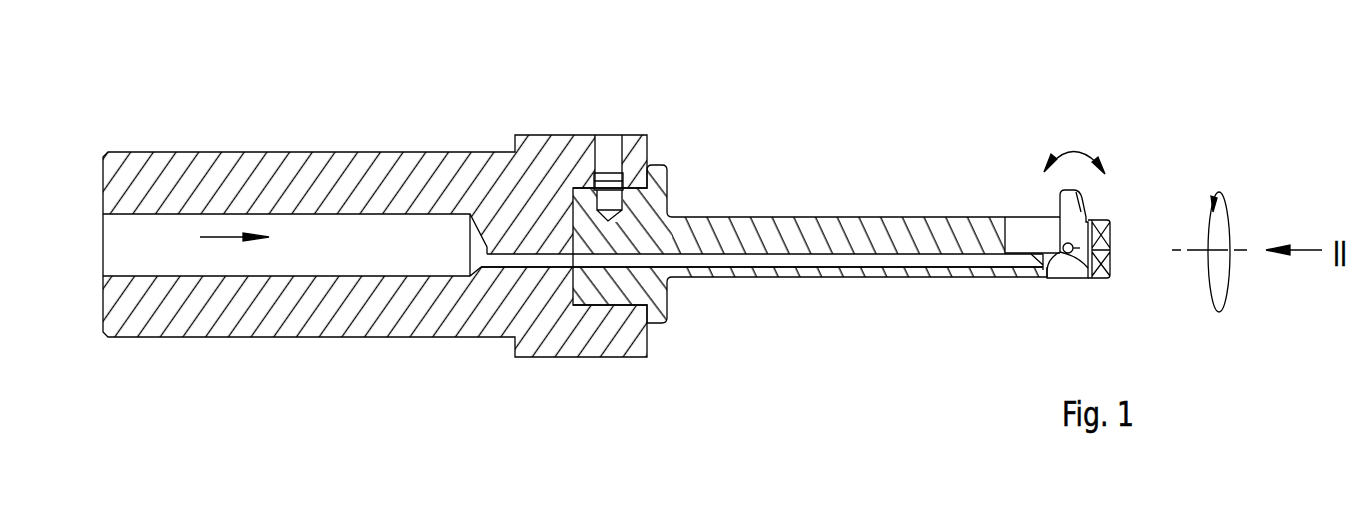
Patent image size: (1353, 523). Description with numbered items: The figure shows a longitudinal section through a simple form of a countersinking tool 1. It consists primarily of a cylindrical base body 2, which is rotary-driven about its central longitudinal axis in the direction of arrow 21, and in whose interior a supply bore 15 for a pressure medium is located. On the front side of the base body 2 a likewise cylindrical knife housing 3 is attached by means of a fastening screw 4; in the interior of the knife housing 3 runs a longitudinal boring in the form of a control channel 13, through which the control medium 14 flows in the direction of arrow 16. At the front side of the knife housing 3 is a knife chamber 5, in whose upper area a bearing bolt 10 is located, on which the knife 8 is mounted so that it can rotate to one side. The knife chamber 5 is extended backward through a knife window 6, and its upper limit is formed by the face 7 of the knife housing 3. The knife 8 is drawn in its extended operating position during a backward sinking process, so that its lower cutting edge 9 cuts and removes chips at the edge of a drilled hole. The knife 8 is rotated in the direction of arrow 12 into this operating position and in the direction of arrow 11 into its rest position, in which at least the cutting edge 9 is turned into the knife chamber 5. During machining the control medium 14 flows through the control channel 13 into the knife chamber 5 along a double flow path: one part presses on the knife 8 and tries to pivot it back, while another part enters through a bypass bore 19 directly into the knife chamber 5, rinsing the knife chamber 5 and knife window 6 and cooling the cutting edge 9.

The countersinking tool 1 is at (790, 138).
The base body 2 is at (537, 150).
The knife housing 3 is at (812, 233).
The fastening screw 4 is at (612, 182).
The knife chamber 5 is at (1030, 230).
The knife window 6 is at (1080, 280).
The face 7 is at (1098, 237).
The knife 8 is at (1087, 225).
The cutting edge 9 is at (1080, 228).
The bearing bolt 10 is at (1066, 254).
The arrow 11 is at (1056, 150).
The arrow 12 is at (1097, 152).
The control channel 13 is at (823, 260).
The control medium 14 is at (823, 260).
The supply bore 15 is at (368, 256).
The arrow 16 is at (217, 240).
The bypass bore 19 is at (1038, 258).
The arrow 21 is at (1228, 232).